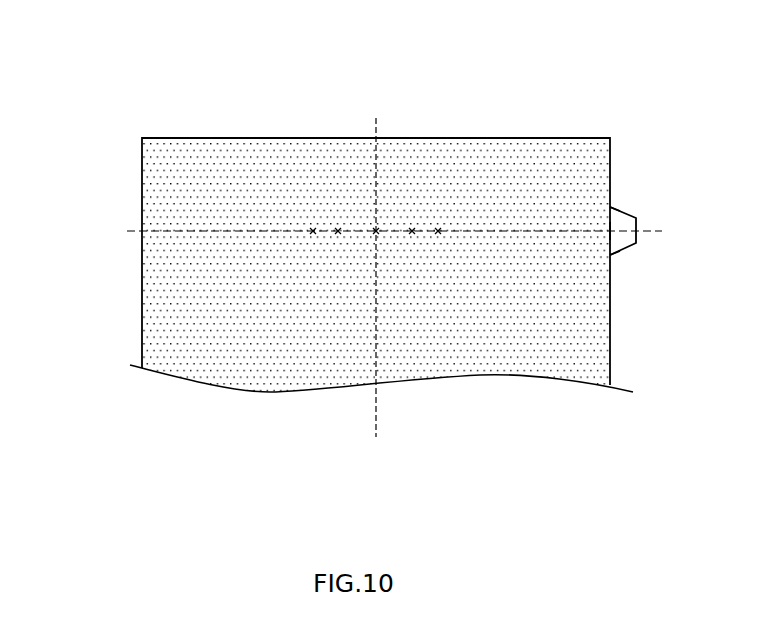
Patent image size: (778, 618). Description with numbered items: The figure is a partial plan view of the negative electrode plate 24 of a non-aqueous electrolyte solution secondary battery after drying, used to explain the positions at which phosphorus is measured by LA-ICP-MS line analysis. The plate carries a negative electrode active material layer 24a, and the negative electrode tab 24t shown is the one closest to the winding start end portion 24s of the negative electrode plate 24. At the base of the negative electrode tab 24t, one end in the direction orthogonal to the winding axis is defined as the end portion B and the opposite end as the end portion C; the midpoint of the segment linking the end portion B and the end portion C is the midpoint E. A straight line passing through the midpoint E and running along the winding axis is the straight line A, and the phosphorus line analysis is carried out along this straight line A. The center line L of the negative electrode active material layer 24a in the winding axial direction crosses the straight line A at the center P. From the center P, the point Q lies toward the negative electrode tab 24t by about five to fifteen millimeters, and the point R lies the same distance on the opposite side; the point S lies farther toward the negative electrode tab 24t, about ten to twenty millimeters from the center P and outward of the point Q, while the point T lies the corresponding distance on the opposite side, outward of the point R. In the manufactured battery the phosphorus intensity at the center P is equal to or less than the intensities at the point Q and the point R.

The negative electrode plate 24 is at (42, 67).
The winding start end portion 24s is at (553, 138).
The negative electrode active material layer 24a is at (600, 362).
The negative electrode tab 24t is at (628, 222).
The end portion B is at (612, 207).
The midpoint E is at (612, 232).
The end portion C is at (612, 255).
The straight line A is at (406, 231).
The center line L is at (376, 293).
The point T is at (313, 231).
The point R is at (338, 231).
The center P is at (376, 231).
The point Q is at (412, 231).
The point S is at (438, 231).